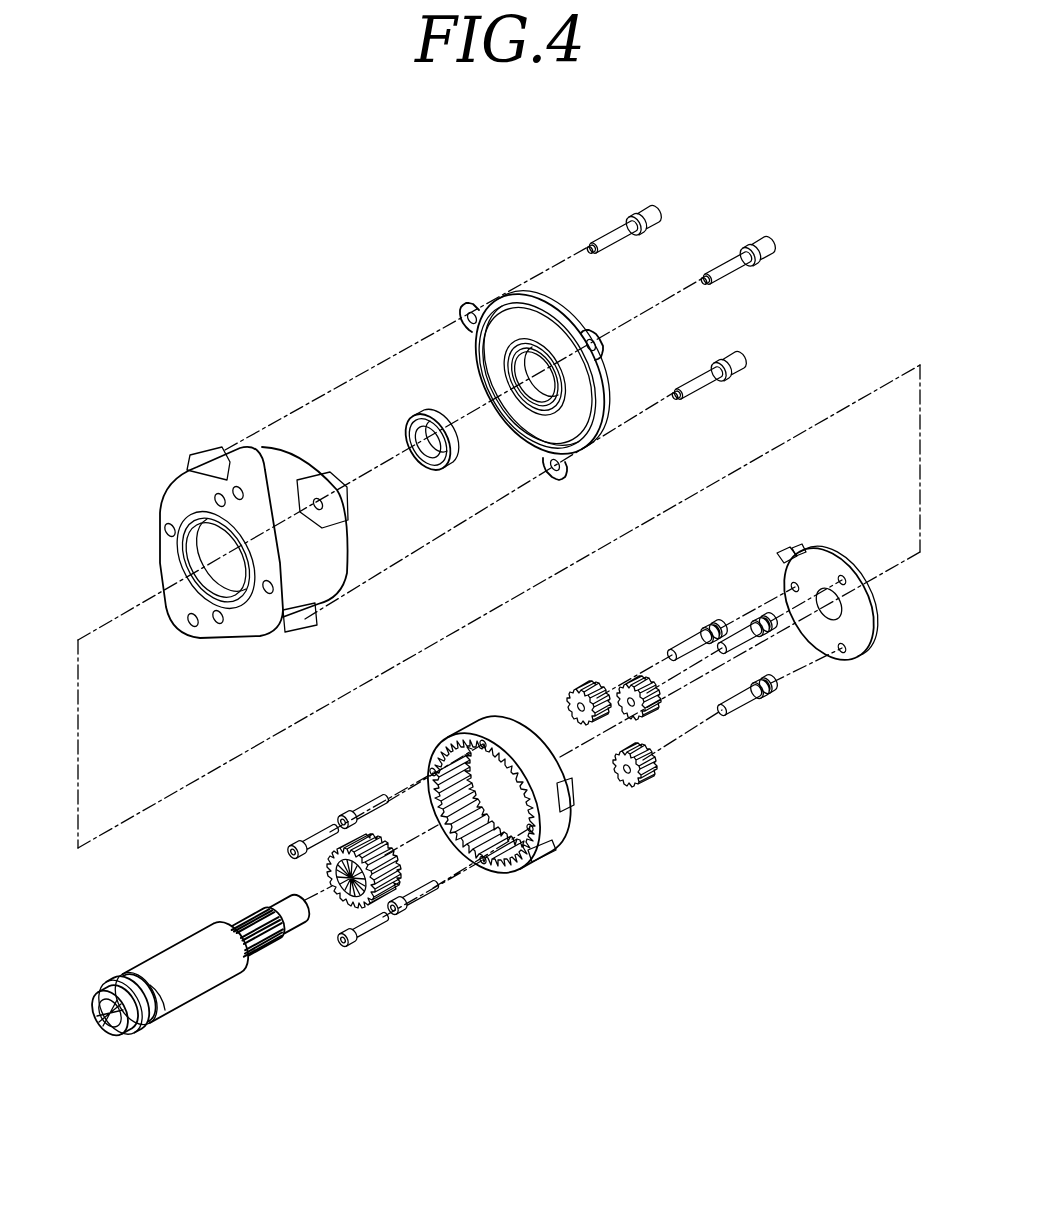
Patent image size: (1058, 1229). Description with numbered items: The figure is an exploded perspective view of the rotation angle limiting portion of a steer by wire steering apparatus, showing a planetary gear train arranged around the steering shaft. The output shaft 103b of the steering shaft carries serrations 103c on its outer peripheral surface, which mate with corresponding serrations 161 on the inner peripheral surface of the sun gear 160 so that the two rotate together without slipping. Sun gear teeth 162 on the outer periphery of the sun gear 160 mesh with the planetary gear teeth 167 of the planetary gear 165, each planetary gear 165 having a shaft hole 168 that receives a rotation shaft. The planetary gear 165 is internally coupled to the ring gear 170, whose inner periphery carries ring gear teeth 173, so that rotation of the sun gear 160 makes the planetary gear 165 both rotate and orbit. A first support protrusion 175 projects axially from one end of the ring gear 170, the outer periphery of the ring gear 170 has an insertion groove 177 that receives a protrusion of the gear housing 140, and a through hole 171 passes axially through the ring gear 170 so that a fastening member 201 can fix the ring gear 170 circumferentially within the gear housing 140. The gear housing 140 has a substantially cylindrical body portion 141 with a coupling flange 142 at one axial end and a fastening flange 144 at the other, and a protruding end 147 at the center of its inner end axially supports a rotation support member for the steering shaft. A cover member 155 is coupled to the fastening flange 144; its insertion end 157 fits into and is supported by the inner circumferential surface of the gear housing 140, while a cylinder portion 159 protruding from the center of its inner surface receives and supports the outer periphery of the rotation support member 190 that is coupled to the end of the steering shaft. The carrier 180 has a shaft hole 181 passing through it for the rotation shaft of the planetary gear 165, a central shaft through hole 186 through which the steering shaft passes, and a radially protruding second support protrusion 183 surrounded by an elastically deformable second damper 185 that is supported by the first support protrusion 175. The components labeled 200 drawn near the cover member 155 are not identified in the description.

The output shaft 103b is at (197, 1005).
The serrations 103c is at (268, 955).
The gear housing 140 is at (247, 528).
The body portion 141 is at (320, 568).
The coupling flange 142 is at (197, 634).
The fastening flange 144 is at (332, 478).
The protruding end 147 is at (175, 503).
The cover member 155 is at (539, 374).
The insertion end 157 is at (505, 440).
The cylinder portion 159 is at (548, 342).
The sun gear 160 is at (330, 888).
The serrations 161 is at (336, 885).
The sun gear teeth 162 is at (352, 812).
The planetary gear 165 is at (672, 748).
The planetary gear teeth 167 is at (657, 773).
The shaft hole 168 is at (632, 785).
The ring gear 170 is at (511, 851).
The through hole 171 is at (482, 862).
The ring gear teeth 173 is at (452, 860).
The first support protrusion 175 is at (572, 810).
The insertion groove 177 is at (505, 862).
The carrier 180 is at (825, 620).
The shaft hole 181 is at (843, 652).
The second support protrusion 183 is at (783, 548).
The second damper 185 is at (797, 549).
The shaft through hole 186 is at (825, 612).
The rotation support member 190 is at (406, 388).
The bolt 200 is at (610, 237).
The fastening member 201 is at (373, 932).